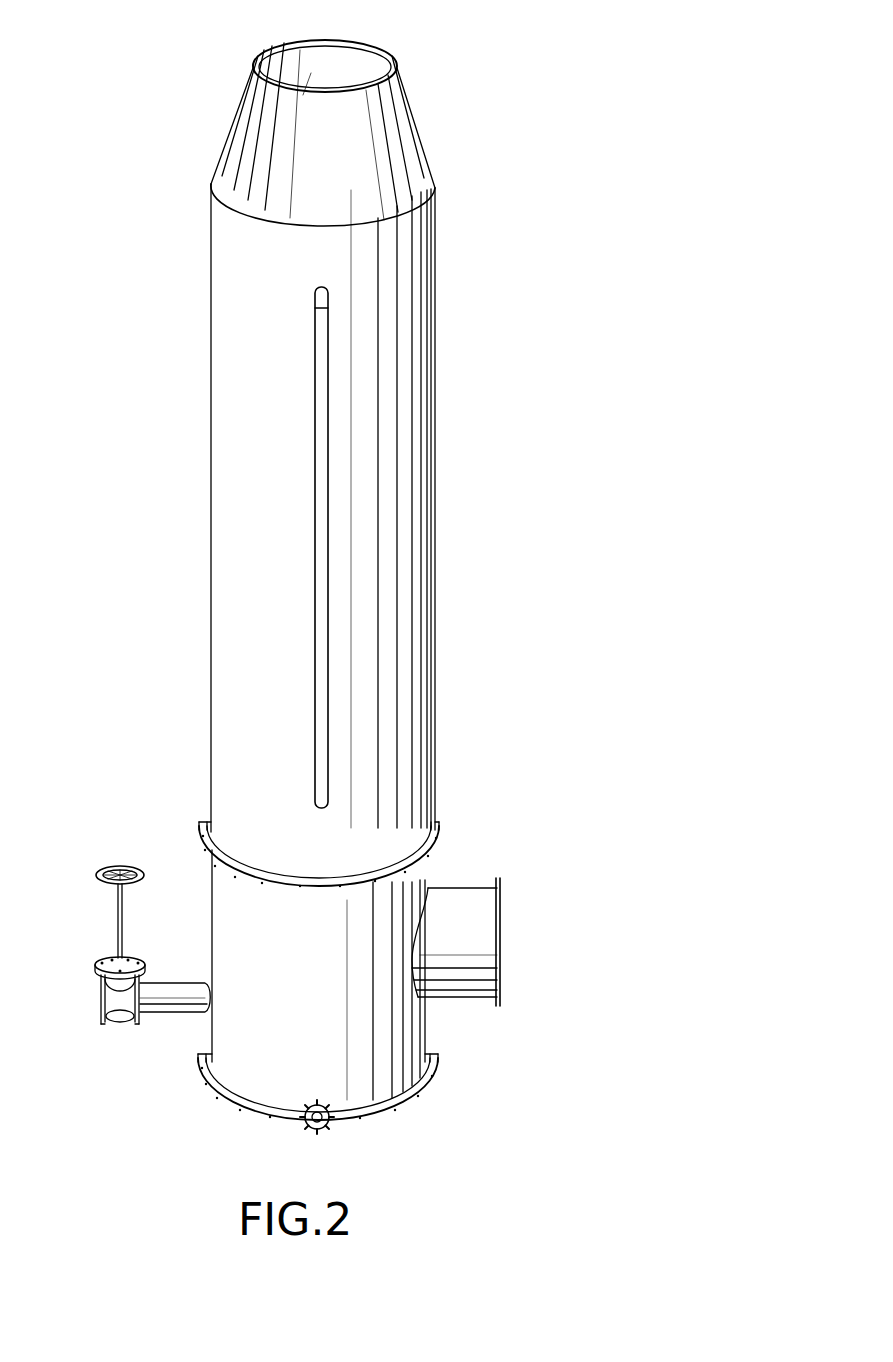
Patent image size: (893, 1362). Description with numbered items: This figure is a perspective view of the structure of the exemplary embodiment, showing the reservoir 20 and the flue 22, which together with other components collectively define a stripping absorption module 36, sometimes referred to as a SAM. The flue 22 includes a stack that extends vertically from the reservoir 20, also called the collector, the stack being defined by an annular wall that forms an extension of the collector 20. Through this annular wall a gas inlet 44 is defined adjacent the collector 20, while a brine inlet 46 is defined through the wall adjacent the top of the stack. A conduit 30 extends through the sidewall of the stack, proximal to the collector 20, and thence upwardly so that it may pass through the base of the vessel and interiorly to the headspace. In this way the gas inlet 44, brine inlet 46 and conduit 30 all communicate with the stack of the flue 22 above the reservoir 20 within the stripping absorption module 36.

The reservoir 20 is at (440, 1067).
The flue 22 is at (238, 357).
The conduit 30 is at (163, 1012).
The stripping absorption module 36 is at (497, 185).
The gas inlet 44 is at (474, 897).
The brine inlet 46 is at (344, 296).